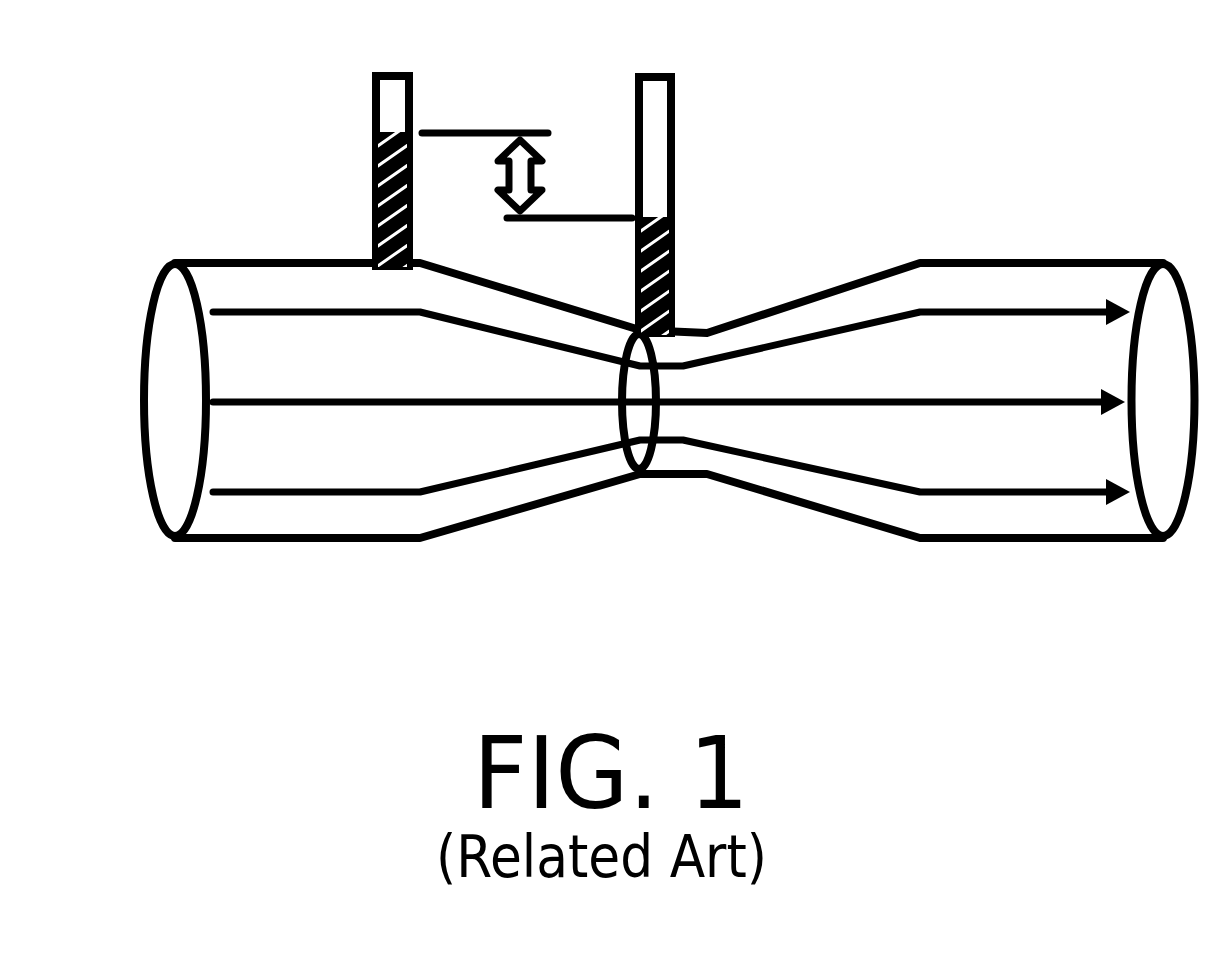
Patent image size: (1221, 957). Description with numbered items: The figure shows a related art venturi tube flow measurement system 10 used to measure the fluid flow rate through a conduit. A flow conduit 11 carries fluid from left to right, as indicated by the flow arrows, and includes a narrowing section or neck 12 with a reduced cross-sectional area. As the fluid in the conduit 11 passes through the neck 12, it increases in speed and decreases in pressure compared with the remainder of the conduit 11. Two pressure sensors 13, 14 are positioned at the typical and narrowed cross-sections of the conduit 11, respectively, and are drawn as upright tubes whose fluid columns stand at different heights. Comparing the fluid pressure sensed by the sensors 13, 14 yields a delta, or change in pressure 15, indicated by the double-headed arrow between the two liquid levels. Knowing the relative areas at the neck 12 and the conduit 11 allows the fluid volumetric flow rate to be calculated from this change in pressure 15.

The venturi flow meter 10 is at (1078, 65).
The flow conduit 11 is at (157, 522).
The neck 12 is at (647, 473).
The pressure sensor 13 is at (372, 100).
The pressure sensor 14 is at (675, 185).
The change in pressure 15 is at (520, 133).